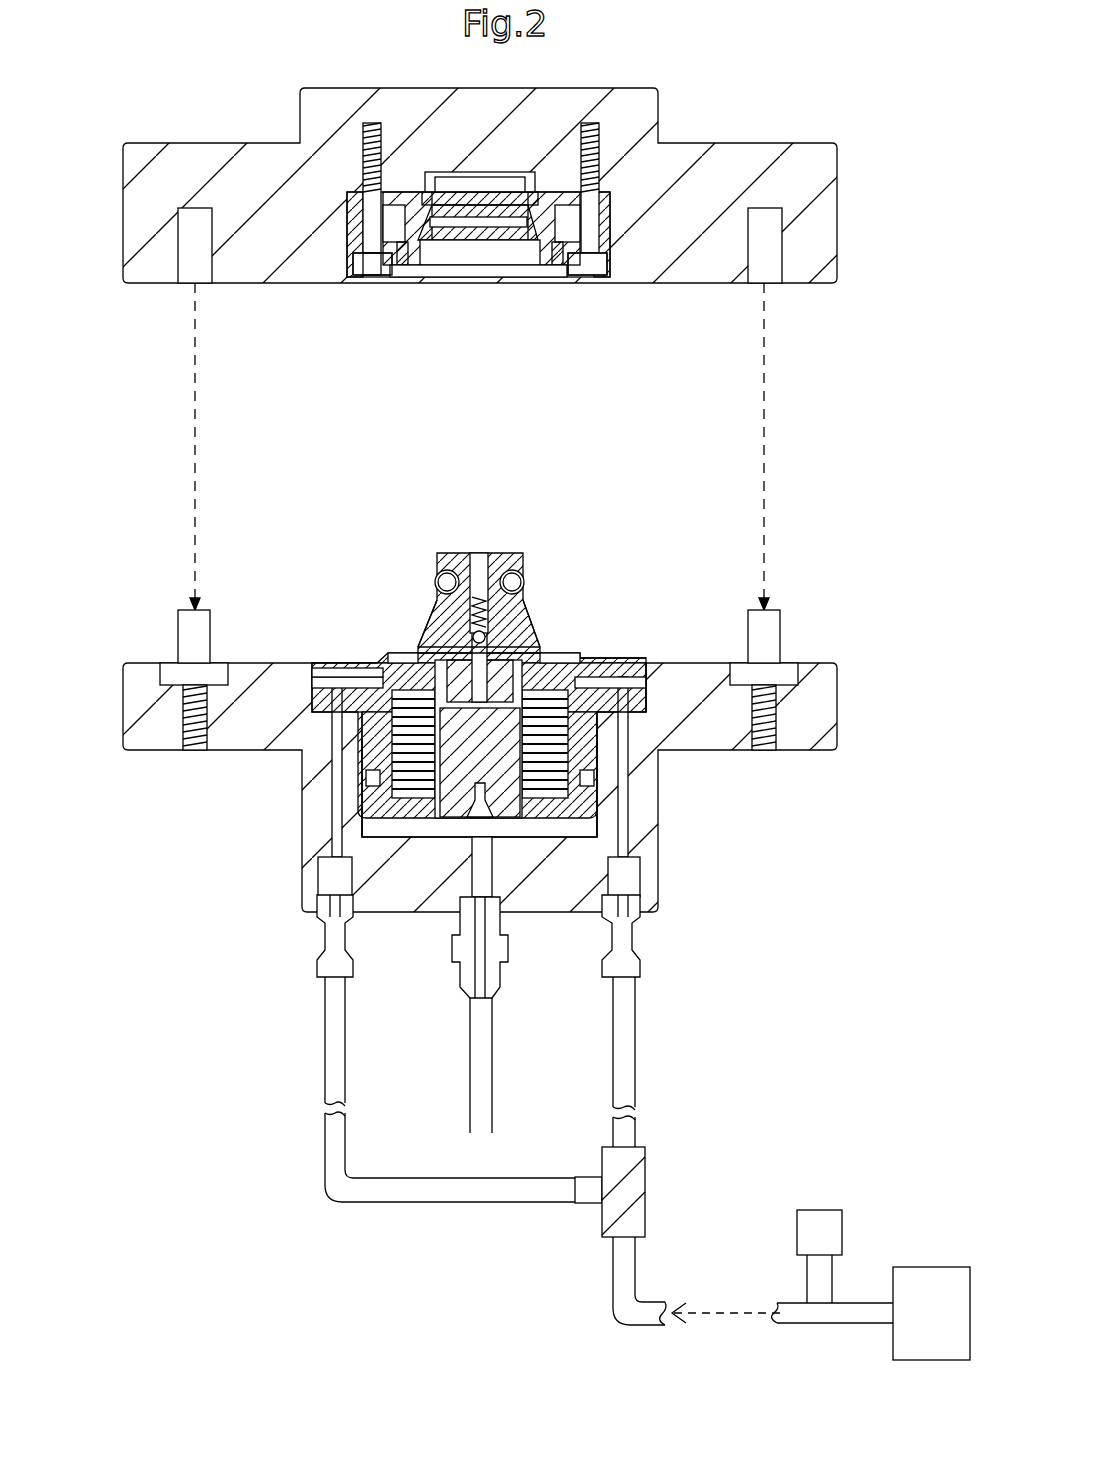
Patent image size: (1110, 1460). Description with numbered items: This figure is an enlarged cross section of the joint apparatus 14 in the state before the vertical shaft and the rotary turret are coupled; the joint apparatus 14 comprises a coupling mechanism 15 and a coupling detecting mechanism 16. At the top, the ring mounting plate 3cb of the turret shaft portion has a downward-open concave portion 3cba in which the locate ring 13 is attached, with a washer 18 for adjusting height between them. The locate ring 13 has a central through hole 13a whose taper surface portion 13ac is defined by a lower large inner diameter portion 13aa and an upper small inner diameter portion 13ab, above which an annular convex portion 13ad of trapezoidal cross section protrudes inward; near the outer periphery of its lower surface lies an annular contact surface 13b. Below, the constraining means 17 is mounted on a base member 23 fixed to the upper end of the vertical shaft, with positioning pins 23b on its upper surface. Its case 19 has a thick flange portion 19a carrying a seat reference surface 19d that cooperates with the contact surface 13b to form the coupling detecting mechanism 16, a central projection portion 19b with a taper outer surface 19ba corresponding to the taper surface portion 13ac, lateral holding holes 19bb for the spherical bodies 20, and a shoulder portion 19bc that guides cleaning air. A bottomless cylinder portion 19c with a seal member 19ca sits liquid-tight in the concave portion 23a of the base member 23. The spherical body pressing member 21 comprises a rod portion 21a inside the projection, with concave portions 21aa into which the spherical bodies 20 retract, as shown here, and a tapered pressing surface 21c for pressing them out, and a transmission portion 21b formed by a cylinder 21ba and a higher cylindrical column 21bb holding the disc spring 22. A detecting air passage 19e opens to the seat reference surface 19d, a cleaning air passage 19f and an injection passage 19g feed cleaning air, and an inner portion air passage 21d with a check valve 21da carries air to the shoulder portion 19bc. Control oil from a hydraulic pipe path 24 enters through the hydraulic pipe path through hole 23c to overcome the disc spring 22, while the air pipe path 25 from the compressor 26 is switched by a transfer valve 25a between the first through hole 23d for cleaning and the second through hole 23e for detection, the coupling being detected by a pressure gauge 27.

The joint apparatus 14 is at (461, 155).
The ring mounting plate 3cb is at (123, 232).
The concave portion 3cba is at (366, 270).
The locate ring 13 is at (459, 229).
The through hole 13a is at (470, 275).
The large inner diameter portion 13aa is at (528, 262).
The small inner diameter portion 13ab is at (443, 236).
The taper surface portion 13ac is at (516, 257).
The annular convex portion 13ad is at (468, 212).
The contact surface 13b is at (378, 270).
The washer 18 is at (547, 195).
The coupling mechanism 15 is at (518, 687).
The coupling detecting mechanism 16 is at (634, 350).
The constraining means 17 is at (531, 528).
The case 19 is at (478, 660).
The flange portion 19a is at (646, 670).
The projection portion 19b is at (438, 537).
The taper outer surface 19ba is at (563, 640).
The holding hole 19bb is at (446, 573).
The shoulder portion 19bc is at (434, 600).
The cylinder portion 19c is at (594, 757).
The seal member 19ca is at (378, 800).
The seat reference surface 19d is at (366, 678).
The detecting air passage 19e is at (350, 666).
The cleaning air passage 19f is at (602, 660).
The injection passage 19g is at (528, 602).
The spherical body 20 is at (496, 554).
The spherical body pressing member 21 is at (398, 828).
The rod portion 21a is at (366, 754).
The concave portion 21aa is at (437, 594).
The transmission portion 21b is at (637, 936).
The cylinder 21ba is at (520, 832).
The cylindrical column 21bb is at (443, 832).
The tapered pressing surface 21c is at (458, 552).
The inner portion air passage 21d is at (325, 944).
The check valve 21da is at (428, 627).
The disc spring 22 is at (372, 832).
The base member 23 is at (487, 782).
The concave portion 23a is at (600, 826).
The positioning pin 23b is at (186, 608).
The hydraulic pipe path through hole 23c is at (462, 952).
The first through hole 23d is at (640, 880).
The second through hole 23e is at (320, 882).
The hydraulic pipe path 24 is at (492, 1075).
The air pipe path 25 is at (609, 1151).
The transfer valve 25a is at (646, 1185).
The compressor 26 is at (932, 1267).
The pressure gauge 27 is at (822, 1210).